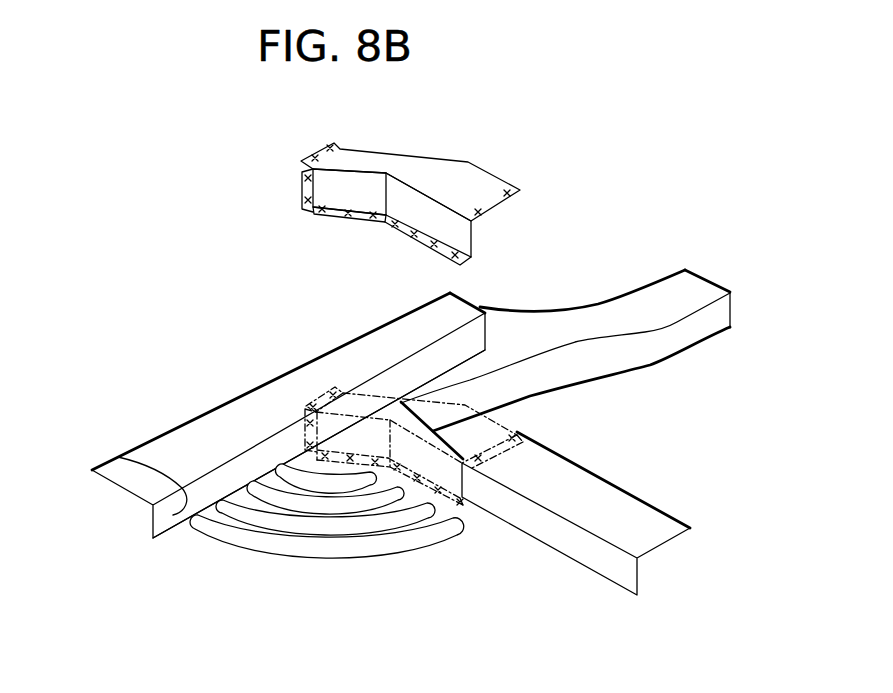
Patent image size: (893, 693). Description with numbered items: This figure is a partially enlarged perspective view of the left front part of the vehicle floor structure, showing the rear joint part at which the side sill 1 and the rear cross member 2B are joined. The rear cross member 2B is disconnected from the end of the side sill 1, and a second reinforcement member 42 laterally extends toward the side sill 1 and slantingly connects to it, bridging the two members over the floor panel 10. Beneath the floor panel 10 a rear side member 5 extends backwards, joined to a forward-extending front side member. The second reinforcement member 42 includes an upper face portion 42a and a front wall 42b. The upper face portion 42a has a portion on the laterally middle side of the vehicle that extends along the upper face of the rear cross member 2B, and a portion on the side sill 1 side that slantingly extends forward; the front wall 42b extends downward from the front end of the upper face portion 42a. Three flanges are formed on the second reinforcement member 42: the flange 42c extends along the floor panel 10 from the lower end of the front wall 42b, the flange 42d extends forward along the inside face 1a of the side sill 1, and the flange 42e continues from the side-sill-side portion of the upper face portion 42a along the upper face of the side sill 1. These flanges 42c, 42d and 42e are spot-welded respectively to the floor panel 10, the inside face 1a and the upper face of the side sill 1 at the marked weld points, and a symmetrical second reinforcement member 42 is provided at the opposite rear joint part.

The side sill 1 is at (178, 435).
The inside face of the side sill 1a is at (118, 457).
The rear side member 5 is at (688, 287).
The rear cross member 2B is at (576, 483).
The floor panel 10 is at (478, 533).
The second reinforcement member 42 is at (382, 190).
The upper face portion 42a is at (394, 162).
The front wall 42b is at (338, 192).
The flange 42c is at (400, 230).
The flange 42d is at (302, 186).
The flange 42e is at (328, 148).